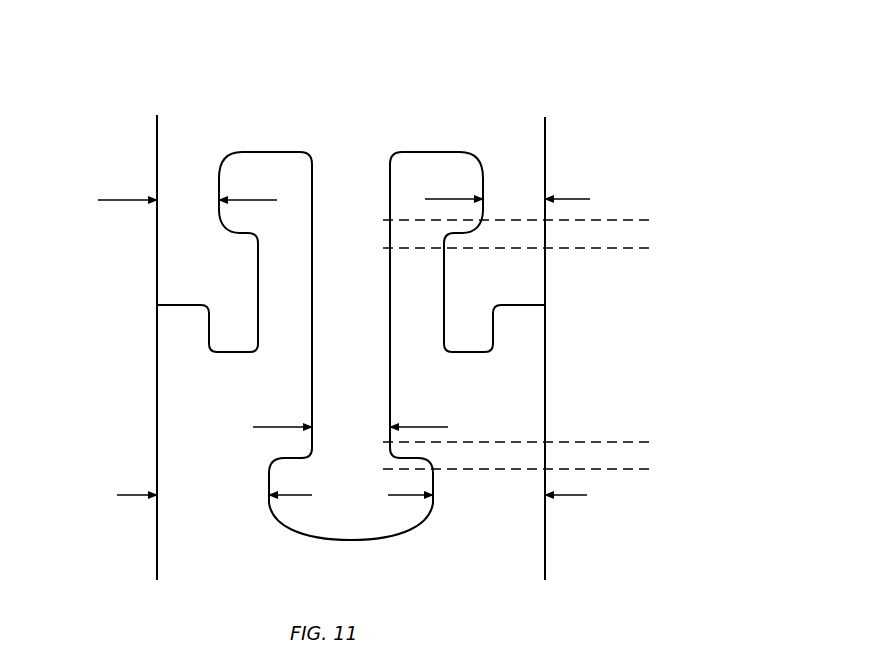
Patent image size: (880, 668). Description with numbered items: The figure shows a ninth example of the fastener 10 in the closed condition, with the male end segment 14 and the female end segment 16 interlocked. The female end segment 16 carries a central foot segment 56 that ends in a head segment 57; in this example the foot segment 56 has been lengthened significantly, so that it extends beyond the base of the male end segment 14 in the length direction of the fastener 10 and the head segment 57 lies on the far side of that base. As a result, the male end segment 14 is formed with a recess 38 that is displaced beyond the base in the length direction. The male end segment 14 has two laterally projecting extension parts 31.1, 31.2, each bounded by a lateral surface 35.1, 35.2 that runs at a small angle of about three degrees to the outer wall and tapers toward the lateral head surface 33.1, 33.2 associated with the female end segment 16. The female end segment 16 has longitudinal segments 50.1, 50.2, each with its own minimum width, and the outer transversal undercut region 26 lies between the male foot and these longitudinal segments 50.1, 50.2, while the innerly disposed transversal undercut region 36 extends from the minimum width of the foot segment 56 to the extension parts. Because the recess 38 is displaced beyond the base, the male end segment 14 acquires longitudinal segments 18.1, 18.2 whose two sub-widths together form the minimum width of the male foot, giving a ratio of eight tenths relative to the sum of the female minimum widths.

The fastener 10 is at (713, 71).
The male end segment 14 is at (593, 535).
The female end segment 16 is at (82, 122).
The longitudinal segment 18.1 is at (177, 452).
The longitudinal segment 18.2 is at (528, 457).
The first outer undercut region 26 is at (655, 220).
The extension part 31.1 is at (232, 156).
The extension part 31.2 is at (468, 155).
The lateral head surface 33.1 is at (260, 150).
The lateral head surface 33.2 is at (440, 150).
The lateral surface 35.1 is at (215, 203).
The lateral surface 35.2 is at (486, 188).
The innerly disposed transversal undercut region 36 is at (655, 442).
The recess 38 is at (300, 515).
The longitudinal segment 50.1 is at (518, 233).
The longitudinal segment 50.2 is at (177, 252).
The foot segment 56 is at (330, 388).
The head segment 57 is at (349, 513).